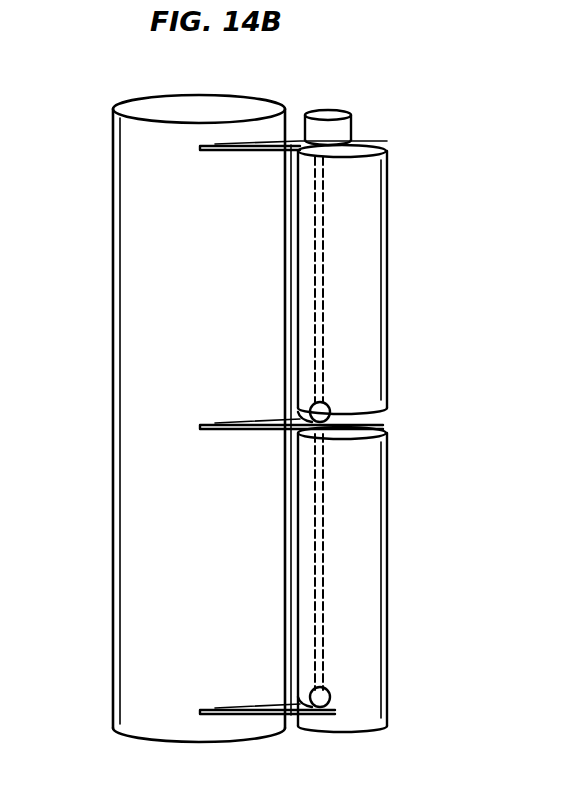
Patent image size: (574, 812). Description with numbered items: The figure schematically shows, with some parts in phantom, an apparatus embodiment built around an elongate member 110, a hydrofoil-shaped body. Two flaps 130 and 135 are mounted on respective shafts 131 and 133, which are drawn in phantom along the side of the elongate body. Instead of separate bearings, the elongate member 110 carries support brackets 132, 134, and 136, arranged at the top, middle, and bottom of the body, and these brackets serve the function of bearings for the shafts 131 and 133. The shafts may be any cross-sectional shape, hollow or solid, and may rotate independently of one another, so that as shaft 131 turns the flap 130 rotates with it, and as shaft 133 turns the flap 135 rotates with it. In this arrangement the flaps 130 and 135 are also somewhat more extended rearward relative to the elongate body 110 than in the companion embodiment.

The elongate member 110 is at (128, 350).
The flap 130 is at (370, 318).
The shaft 131 is at (323, 243).
The support bracket 132 is at (352, 127).
The shaft 133 is at (323, 512).
The support bracket 134 is at (330, 430).
The flap 135 is at (370, 592).
The support bracket 136 is at (333, 712).